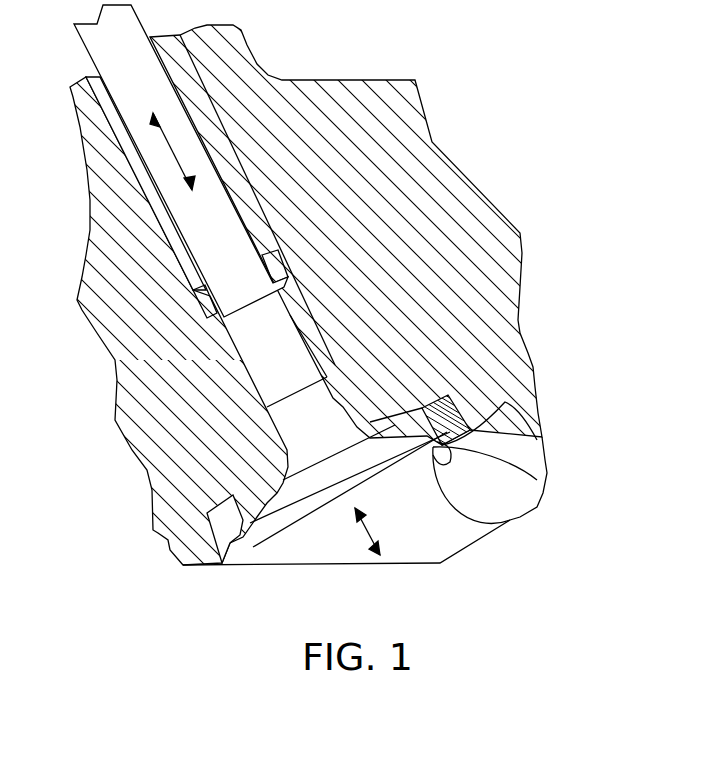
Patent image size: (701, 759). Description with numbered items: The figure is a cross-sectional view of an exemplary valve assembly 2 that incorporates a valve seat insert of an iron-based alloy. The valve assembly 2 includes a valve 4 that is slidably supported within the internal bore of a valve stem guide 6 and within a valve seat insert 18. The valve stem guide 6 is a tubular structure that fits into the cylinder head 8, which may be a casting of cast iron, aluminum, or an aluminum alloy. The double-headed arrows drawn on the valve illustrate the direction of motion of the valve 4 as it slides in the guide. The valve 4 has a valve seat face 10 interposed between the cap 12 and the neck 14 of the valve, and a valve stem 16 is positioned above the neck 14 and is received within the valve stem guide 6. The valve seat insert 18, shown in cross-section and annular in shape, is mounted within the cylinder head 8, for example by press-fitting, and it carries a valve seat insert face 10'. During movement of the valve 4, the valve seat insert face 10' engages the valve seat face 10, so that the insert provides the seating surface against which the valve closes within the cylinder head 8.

The valve assembly 2 is at (387, 373).
The valve 4 is at (172, 156).
The valve stem guide 6 is at (170, 242).
The cylinder head 8 is at (505, 402).
The valve seat face 10 is at (350, 325).
The valve seat insert face 10' is at (389, 495).
The cap 12 is at (537, 480).
The neck 14 is at (415, 390).
The valve stem 16 is at (235, 298).
The valve seat insert 18 is at (450, 396).